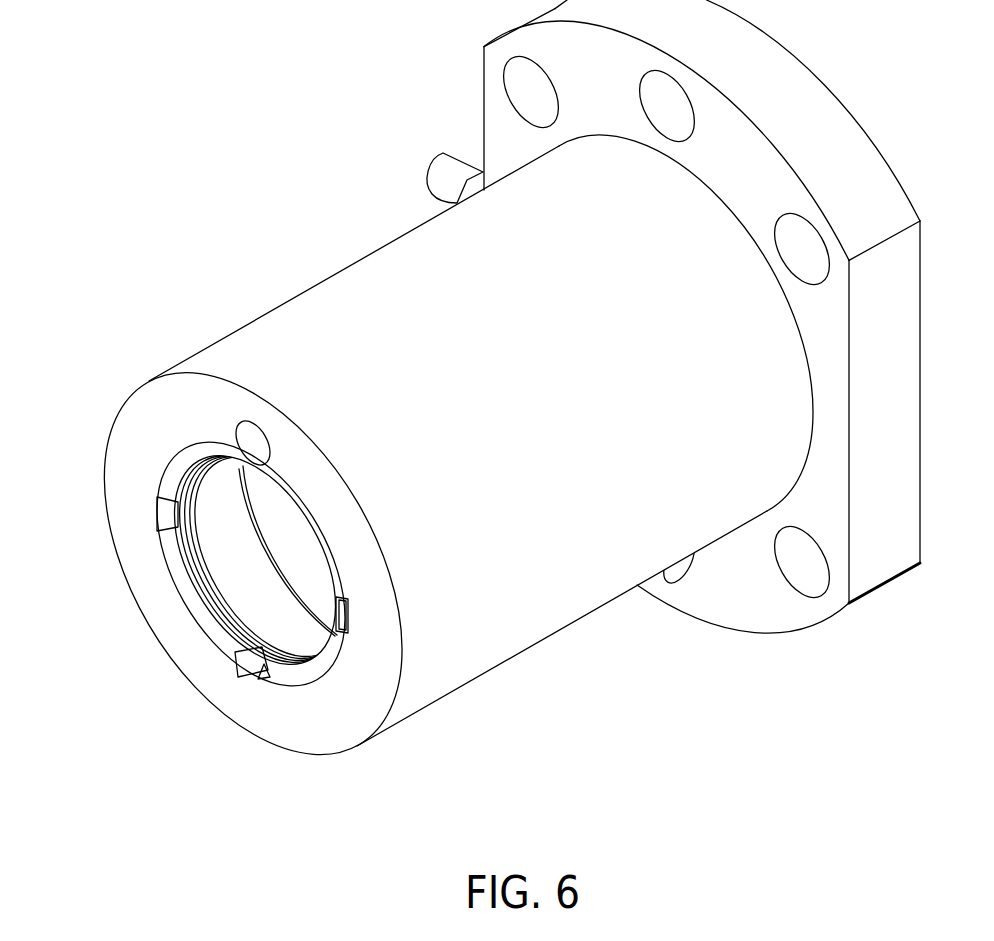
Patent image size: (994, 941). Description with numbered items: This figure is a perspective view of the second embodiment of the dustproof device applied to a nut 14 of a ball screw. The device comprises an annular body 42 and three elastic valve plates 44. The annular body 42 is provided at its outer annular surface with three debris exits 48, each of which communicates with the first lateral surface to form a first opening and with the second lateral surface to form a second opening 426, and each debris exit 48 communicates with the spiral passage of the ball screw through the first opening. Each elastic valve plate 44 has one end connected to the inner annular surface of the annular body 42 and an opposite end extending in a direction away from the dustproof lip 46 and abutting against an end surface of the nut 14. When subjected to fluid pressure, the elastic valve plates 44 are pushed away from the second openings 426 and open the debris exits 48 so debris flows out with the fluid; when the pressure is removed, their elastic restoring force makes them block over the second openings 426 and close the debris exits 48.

The nut 14 is at (632, 637).
The annular body 42 is at (193, 455).
The elastic valve plates 44 is at (157, 520).
The dustproof lip 46 is at (235, 617).
The second opening 426 is at (428, 695).
The debris exits 48 is at (348, 618).